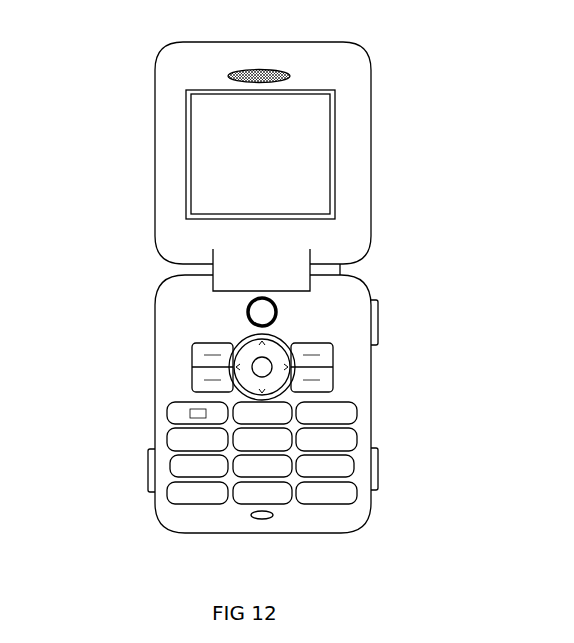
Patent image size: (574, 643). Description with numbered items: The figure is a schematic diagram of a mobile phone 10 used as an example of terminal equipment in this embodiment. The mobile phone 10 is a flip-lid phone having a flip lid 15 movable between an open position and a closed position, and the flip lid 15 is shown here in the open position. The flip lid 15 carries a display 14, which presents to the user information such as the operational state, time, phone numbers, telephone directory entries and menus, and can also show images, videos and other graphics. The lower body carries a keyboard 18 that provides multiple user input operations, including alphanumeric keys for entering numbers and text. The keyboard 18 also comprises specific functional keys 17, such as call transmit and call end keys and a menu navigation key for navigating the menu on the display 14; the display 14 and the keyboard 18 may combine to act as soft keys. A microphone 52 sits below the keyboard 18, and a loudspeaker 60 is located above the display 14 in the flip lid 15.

The mobile phone 10 is at (122, 90).
The display 14 is at (188, 160).
The flip lid 15 is at (154, 186).
The specific functional keys 17 is at (255, 367).
The keyboard 18 is at (210, 512).
The microphone 52 is at (265, 521).
The speaker 60 is at (292, 76).